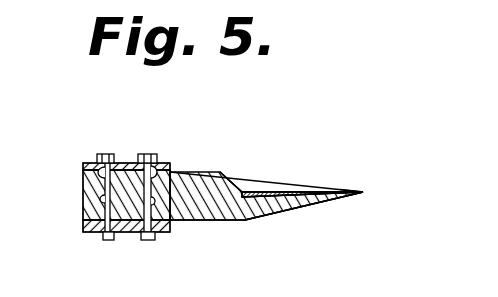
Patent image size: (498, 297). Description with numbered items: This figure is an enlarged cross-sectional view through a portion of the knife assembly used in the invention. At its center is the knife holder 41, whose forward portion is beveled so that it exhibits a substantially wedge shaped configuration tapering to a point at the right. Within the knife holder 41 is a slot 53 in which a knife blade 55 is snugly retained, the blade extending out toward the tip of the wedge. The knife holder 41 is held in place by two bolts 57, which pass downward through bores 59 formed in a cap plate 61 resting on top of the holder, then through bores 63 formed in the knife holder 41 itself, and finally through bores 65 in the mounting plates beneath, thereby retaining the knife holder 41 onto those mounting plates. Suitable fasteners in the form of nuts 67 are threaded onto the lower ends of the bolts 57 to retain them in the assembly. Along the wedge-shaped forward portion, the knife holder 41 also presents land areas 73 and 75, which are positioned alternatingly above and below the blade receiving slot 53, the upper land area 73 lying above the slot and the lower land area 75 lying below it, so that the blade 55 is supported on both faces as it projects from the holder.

The knife holder 41 is at (247, 220).
The slot 53 is at (276, 192).
The knife blade 55 is at (363, 192).
The bolts 57 is at (95, 156).
The bores 59 is at (97, 176).
The cap plate 61 is at (120, 164).
The bores 63 is at (153, 201).
The bores 65 is at (102, 224).
The nuts 67 is at (105, 240).
The land area 73 is at (250, 172).
The land area 75 is at (280, 212).